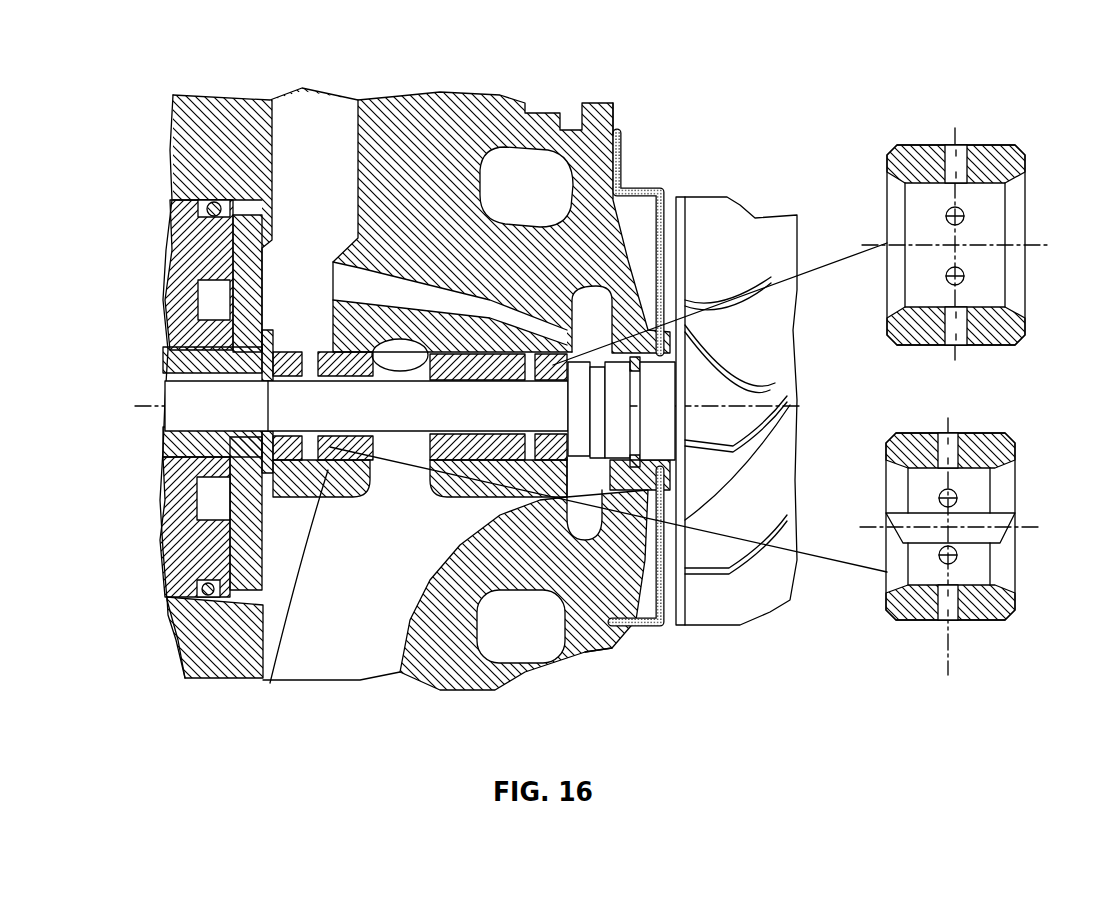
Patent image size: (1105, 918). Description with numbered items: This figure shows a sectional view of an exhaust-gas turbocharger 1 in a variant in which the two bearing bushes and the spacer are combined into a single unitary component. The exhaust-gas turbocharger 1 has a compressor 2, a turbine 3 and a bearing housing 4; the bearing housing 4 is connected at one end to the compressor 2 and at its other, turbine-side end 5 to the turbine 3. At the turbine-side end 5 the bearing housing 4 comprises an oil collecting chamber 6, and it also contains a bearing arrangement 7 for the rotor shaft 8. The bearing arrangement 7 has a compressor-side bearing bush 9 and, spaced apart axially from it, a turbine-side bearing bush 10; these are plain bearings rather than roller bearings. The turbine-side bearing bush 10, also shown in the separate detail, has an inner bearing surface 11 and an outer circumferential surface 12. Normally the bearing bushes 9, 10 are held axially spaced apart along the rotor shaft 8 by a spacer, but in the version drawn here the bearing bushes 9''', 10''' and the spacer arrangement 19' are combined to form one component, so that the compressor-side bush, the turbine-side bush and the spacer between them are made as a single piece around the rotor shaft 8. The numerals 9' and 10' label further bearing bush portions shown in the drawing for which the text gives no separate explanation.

The exhaust-gas turbocharger 1 is at (463, 95).
The compressor 2 is at (185, 250).
The turbine 3 is at (745, 218).
The bearing housing 4 is at (620, 135).
The turbine-side end 5 is at (678, 200).
The oil collecting chamber 6 is at (625, 250).
The bearing arrangement 7 is at (287, 470).
The rotor shaft 8 is at (170, 471).
The compressor-side bearing bush 9 is at (952, 519).
The compressor-side bearing element 9' is at (282, 201).
The bearing bush 9''' is at (206, 651).
The turbine-side bearing bush 10 is at (966, 216).
The turbine-side bearing element 10' is at (528, 226).
The bearing bush 10''' is at (612, 682).
The inner bearing surface 11 is at (975, 488).
The outer circumferential surface 12 is at (918, 433).
The spacer arrangement 19' is at (420, 249).